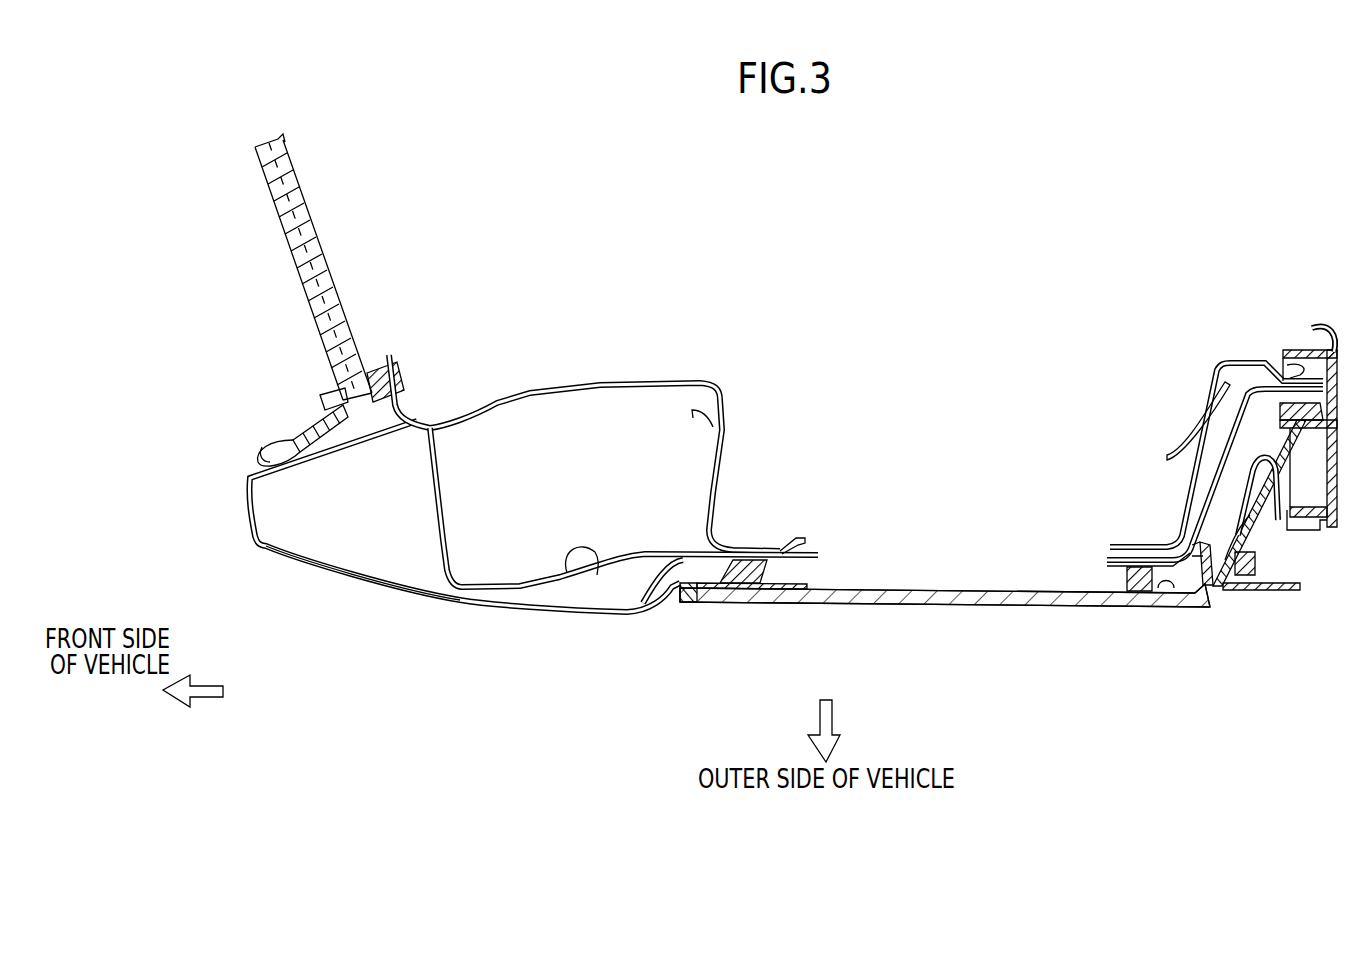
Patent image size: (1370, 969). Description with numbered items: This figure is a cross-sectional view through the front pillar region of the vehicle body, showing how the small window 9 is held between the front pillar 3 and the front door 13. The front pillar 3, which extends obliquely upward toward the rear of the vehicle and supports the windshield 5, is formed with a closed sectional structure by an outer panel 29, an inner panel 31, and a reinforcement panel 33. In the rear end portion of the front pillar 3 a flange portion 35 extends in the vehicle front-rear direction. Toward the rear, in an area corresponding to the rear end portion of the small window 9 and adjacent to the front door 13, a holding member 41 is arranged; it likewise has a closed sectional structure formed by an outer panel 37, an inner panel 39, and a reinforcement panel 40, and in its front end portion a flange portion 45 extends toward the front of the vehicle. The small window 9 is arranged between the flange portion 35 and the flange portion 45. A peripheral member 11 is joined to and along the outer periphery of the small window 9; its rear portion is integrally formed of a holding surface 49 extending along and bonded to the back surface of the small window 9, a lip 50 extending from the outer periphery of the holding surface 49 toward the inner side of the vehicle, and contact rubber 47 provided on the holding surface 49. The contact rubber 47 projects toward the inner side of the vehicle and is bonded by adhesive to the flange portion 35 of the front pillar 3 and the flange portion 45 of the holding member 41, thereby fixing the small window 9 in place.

The front pillar 3 is at (486, 623).
The windshield 5 is at (285, 263).
The small window 9 is at (970, 608).
The peripheral member 11 is at (1210, 602).
The front door 13 is at (1285, 536).
The outer panel 29 is at (353, 582).
The inner panel 31 is at (612, 385).
The reinforcement panel 33 is at (595, 575).
The flange portion 35 is at (752, 550).
The outer panel 37 is at (1255, 428).
The inner panel 39 is at (1238, 368).
The reinforcement panel 40 is at (1245, 400).
The holding member 41 is at (1198, 395).
The flange portion 45 is at (1118, 550).
The contact rubber 47 is at (1130, 572).
The holding surface 49 is at (1165, 594).
The lip 50 is at (1200, 557).